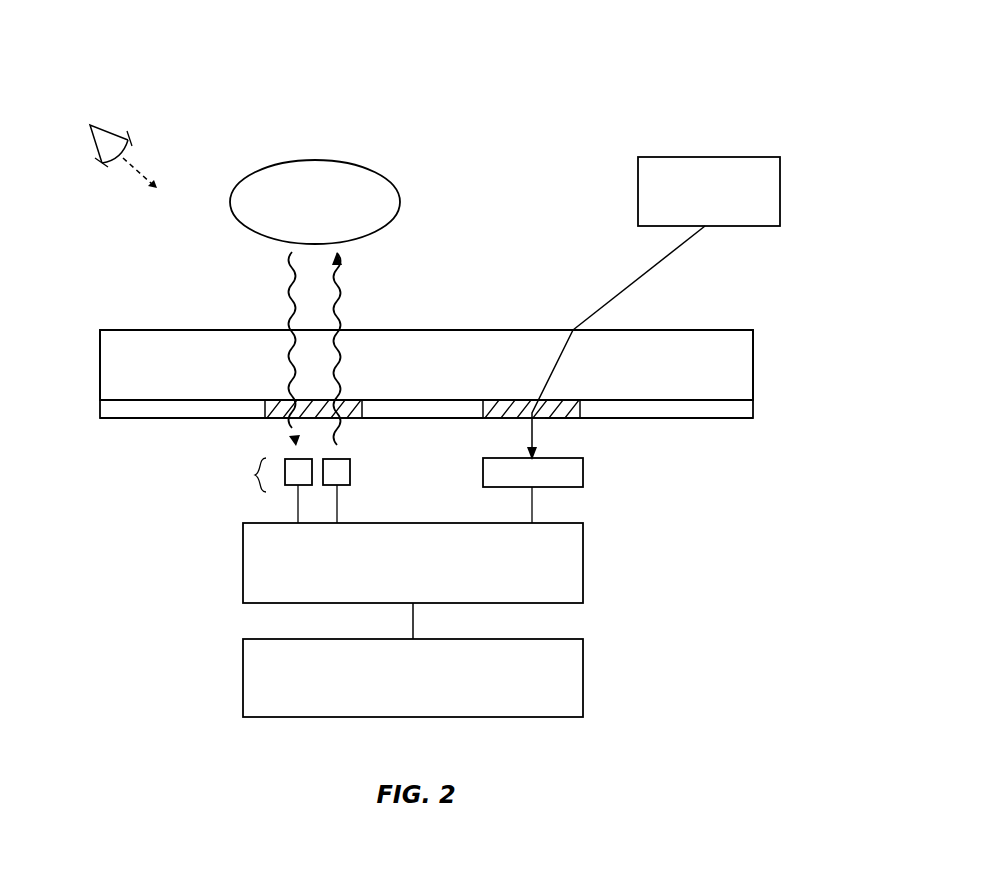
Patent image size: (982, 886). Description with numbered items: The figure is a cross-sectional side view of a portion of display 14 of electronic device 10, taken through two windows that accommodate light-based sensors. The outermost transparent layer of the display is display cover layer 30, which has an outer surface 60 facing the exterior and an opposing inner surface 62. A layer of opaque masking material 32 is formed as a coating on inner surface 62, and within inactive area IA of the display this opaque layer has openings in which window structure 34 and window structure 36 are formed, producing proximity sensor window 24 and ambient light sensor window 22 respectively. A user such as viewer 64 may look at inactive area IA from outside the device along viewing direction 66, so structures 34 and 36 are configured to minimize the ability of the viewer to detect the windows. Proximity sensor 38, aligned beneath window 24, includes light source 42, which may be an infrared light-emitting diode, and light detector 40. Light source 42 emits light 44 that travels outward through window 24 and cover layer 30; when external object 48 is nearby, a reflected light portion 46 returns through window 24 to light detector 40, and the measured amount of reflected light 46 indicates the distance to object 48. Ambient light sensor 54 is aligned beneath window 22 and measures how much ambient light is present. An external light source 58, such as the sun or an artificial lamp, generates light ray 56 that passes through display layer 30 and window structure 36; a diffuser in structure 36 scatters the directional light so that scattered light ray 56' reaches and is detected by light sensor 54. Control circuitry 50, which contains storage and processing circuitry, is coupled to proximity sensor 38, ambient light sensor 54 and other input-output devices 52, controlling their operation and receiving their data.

The electronic device 10 is at (642, 68).
The display 14 is at (719, 315).
The ambient light sensor window 22 is at (572, 391).
The proximity sensor window 24 is at (357, 391).
The display cover layer 30 is at (753, 370).
The opaque masking material 32 is at (100, 411).
The window structure 34 is at (275, 418).
The window structure 36 is at (556, 418).
The light-based proximity sensor 38 is at (319, 489).
The light detector 40 is at (290, 488).
The light source 42 is at (351, 471).
The light 44 is at (346, 291).
The reflected light portion 46 is at (289, 291).
The external object 48 is at (400, 203).
The control circuitry 50 is at (584, 565).
The input-output devices 52 is at (584, 678).
The ambient light sensor 54 is at (584, 472).
The light ray 56 is at (639, 278).
The scattered light ray 56' is at (521, 395).
The light source 58 is at (781, 190).
The outer surface 60 is at (156, 330).
The inner surface 62 is at (120, 399).
The viewer 64 is at (113, 132).
The viewing direction 66 is at (133, 167).
The inactive area IA is at (480, 316).